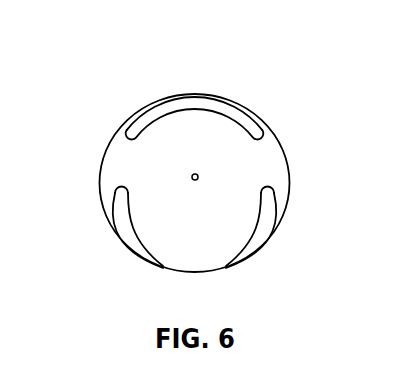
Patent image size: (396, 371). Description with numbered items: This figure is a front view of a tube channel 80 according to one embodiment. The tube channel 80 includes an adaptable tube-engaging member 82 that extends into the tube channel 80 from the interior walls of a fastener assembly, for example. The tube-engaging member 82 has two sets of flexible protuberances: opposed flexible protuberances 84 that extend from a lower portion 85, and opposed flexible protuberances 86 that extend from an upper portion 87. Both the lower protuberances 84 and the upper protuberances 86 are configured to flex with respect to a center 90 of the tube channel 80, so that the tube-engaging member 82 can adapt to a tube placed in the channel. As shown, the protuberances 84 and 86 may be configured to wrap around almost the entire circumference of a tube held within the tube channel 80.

The tube channel 80 is at (114, 45).
The adaptable tube-engaging member 82 is at (284, 173).
The opposed flexible protuberances 84 is at (193, 228).
The lower portion 85 is at (106, 225).
The opposed flexible protuberances 86 is at (191, 131).
The upper portion 87 is at (127, 128).
The center 90 is at (196, 173).